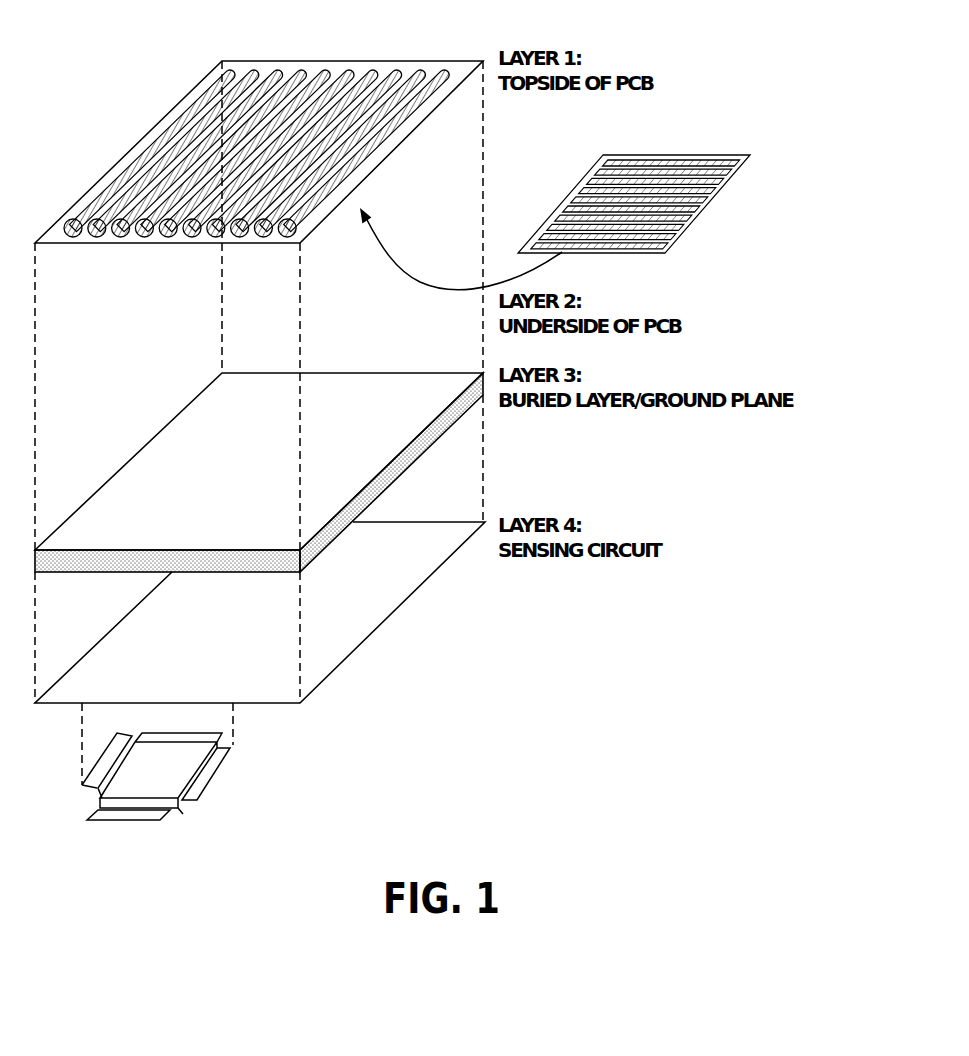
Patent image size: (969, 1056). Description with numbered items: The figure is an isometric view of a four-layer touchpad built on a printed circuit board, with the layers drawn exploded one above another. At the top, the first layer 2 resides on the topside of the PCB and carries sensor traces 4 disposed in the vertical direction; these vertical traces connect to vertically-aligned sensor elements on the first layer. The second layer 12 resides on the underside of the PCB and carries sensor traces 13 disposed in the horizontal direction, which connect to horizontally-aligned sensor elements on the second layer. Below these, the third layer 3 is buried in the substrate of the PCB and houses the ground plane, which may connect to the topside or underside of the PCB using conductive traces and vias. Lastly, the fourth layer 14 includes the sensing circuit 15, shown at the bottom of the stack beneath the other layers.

The first layer 2 is at (264, 61).
The sensor traces 4 is at (190, 110).
The second layer 12 is at (682, 155).
The sensor traces 13 is at (594, 168).
The third layer 3 is at (447, 373).
The fourth layer 14 is at (447, 522).
The sensing circuit 15 is at (182, 815).